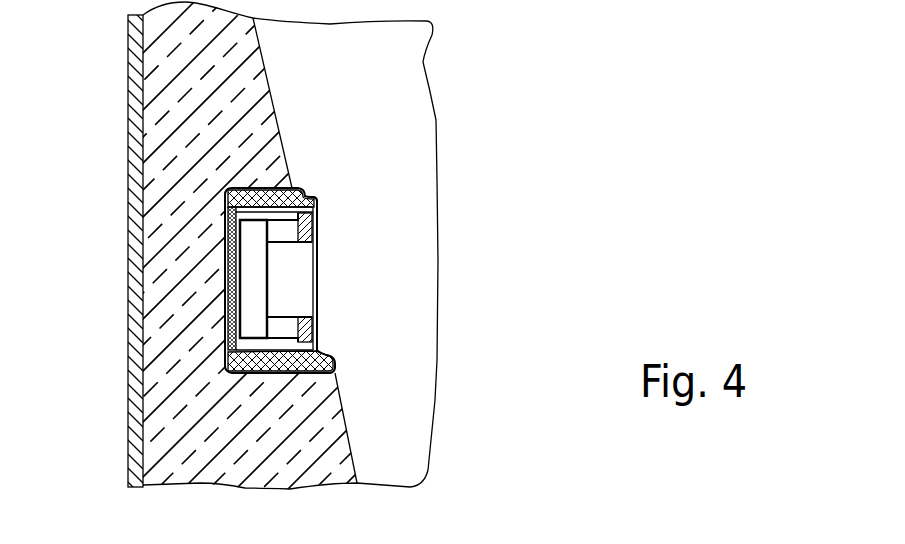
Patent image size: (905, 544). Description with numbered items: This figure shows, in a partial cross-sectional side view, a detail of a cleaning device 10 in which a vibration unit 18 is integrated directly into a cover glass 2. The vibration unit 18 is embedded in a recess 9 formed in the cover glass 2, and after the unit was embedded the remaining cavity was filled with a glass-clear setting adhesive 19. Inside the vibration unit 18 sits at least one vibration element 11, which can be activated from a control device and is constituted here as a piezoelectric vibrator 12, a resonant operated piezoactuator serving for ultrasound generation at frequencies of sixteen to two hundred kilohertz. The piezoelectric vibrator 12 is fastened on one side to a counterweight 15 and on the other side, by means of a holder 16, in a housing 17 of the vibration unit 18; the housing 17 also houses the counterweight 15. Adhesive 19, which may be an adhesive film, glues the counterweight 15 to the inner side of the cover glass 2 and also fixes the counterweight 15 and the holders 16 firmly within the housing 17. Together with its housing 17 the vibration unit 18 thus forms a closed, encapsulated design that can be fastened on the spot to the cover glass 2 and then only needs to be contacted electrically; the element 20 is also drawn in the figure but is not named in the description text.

The body 2 is at (180, 297).
The contact surface 9 is at (285, 374).
The sensor arrangement 10 is at (504, 82).
The housing 11 is at (336, 216).
The sensor element 12 is at (298, 274).
The carrier 15 is at (263, 307).
The contact element 16 is at (315, 325).
The contact element 17 is at (317, 340).
The insulating layer 18 is at (224, 256).
The sealing element 19 is at (238, 195).
The wall 20 is at (138, 47).